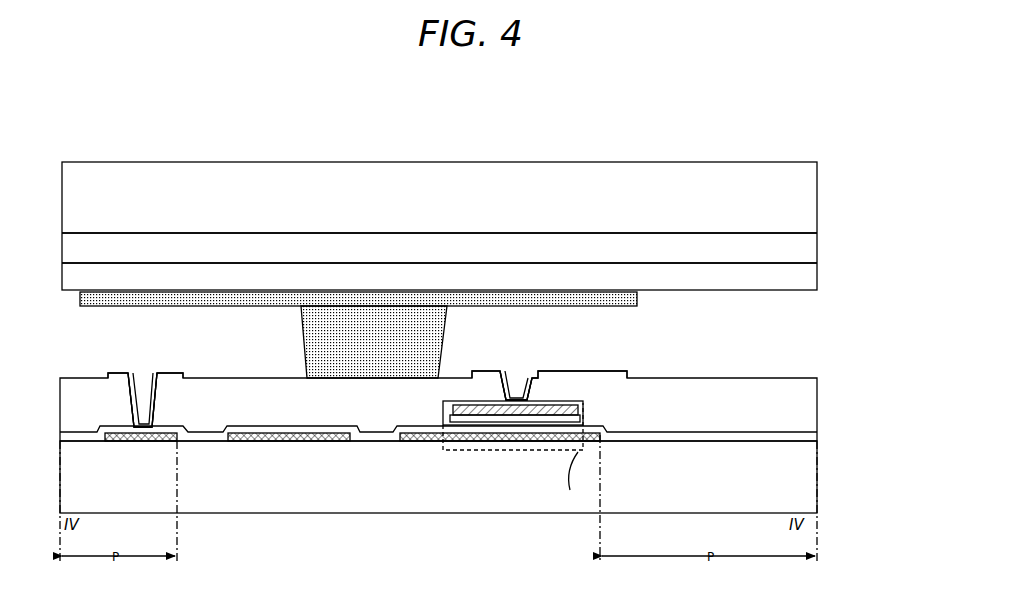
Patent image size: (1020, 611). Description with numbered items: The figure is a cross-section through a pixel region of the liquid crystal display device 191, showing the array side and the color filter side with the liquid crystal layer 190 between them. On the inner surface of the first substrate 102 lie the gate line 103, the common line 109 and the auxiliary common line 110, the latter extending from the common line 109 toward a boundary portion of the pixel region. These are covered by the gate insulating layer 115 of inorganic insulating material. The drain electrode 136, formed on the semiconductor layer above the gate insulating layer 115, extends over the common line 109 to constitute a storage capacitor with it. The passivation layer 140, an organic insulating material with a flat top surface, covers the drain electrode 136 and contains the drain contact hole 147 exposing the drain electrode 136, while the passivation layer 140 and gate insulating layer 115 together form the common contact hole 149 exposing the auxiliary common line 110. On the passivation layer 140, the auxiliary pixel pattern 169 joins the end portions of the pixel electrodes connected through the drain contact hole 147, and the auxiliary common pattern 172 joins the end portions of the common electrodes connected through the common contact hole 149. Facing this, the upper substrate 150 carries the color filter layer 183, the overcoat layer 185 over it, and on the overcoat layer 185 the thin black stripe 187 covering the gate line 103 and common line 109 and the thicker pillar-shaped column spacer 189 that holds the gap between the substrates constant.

The display device 191 is at (733, 123).
The upper panel 150 is at (810, 208).
The color filter layer 183 is at (552, 250).
The overcoat layer 185 is at (635, 275).
The black stripe 187 is at (481, 300).
The column spacer 189 is at (437, 343).
The liquid crystal layer 190 is at (465, 417).
The passivation layer 140 is at (697, 380).
The auxiliary common pattern 172 is at (165, 373).
The common contact hole 149 is at (141, 390).
The auxiliary pixel pattern 169 is at (593, 372).
The drain contact hole 147 is at (513, 388).
The gate insulating layer 115 is at (667, 442).
The auxiliary common line 110 is at (135, 442).
The gate line 103 is at (290, 442).
The common line 109 is at (520, 446).
The drain electrode 136 is at (547, 405).
The first substrate 102 is at (804, 507).